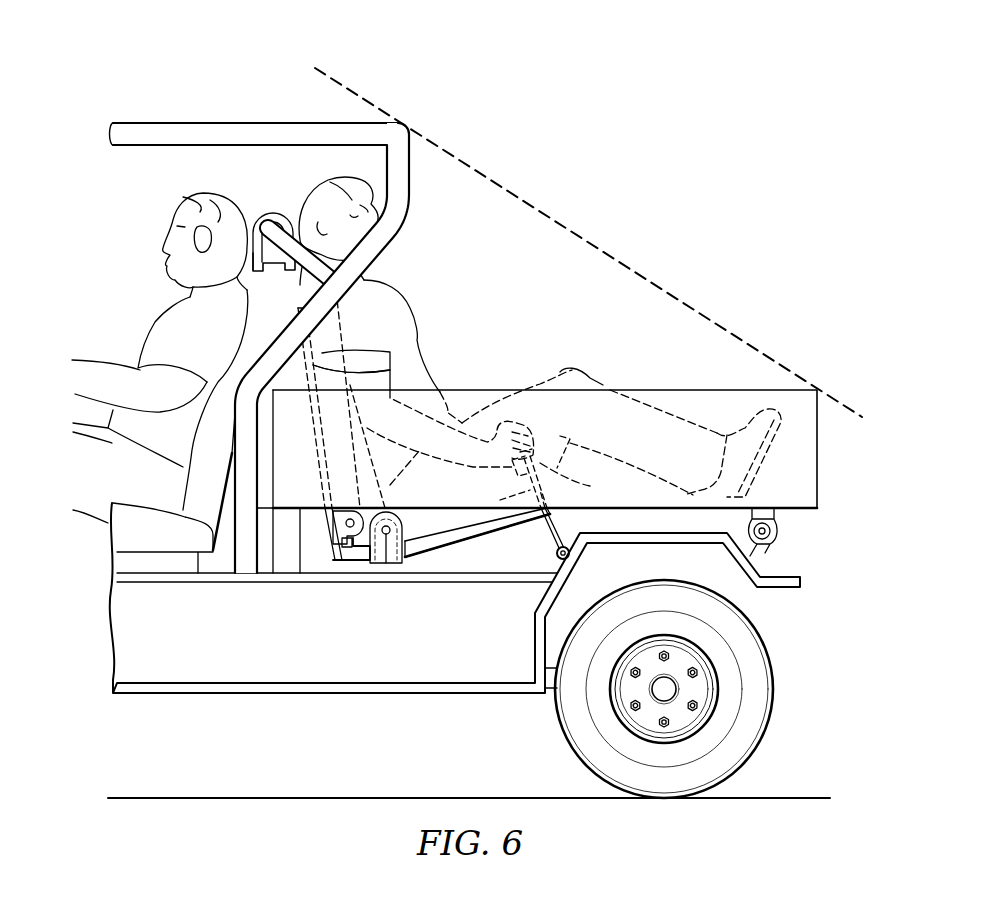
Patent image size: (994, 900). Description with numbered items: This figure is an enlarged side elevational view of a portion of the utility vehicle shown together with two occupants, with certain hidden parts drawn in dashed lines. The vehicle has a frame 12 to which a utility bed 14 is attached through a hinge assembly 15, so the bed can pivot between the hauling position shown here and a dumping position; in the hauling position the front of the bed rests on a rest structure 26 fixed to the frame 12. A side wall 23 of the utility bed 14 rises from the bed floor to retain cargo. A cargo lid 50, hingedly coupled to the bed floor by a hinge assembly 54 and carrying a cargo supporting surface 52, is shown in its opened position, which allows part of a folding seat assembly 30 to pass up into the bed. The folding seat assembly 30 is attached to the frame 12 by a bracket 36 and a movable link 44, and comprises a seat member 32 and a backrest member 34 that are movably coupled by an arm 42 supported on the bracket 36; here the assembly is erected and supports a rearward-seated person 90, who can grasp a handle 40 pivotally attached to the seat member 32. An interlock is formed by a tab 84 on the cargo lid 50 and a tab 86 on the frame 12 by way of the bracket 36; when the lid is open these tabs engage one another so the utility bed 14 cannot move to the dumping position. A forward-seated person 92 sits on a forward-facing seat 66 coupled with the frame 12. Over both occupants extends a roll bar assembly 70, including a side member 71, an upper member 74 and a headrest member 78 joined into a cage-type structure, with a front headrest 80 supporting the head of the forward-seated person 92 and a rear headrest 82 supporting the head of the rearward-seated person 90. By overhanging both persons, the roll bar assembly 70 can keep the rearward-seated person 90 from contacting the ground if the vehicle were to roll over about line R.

The frame 12 is at (814, 584).
The utility bed 14 is at (633, 362).
The hinge assembly 15 is at (784, 533).
The side wall 23 is at (724, 405).
The rest structure 26 is at (274, 534).
The folding seat assembly 30 is at (477, 560).
The seat member 32 is at (448, 541).
The backrest member 34 is at (395, 368).
The bracket 36 is at (380, 568).
The handle 40 is at (566, 478).
The arm 42 is at (390, 576).
The movable link 44 is at (548, 540).
The cargo lid 50 is at (333, 562).
The cargo supporting surface 52 is at (326, 526).
The hinge assembly 54 is at (353, 559).
The forward-facing seat 66 is at (112, 543).
The roll bar assembly 70 is at (196, 102).
The side member 71 is at (410, 191).
The upper member 74 is at (255, 128).
The headrest member 78 is at (306, 282).
The front headrest 80 is at (250, 212).
The rear headrest 82 is at (292, 218).
The tab 84 is at (358, 560).
The tab 86 is at (373, 566).
The rearward-seated person 90 is at (479, 294).
The forward-seated person 92 is at (114, 316).
The line R is at (588, 242).